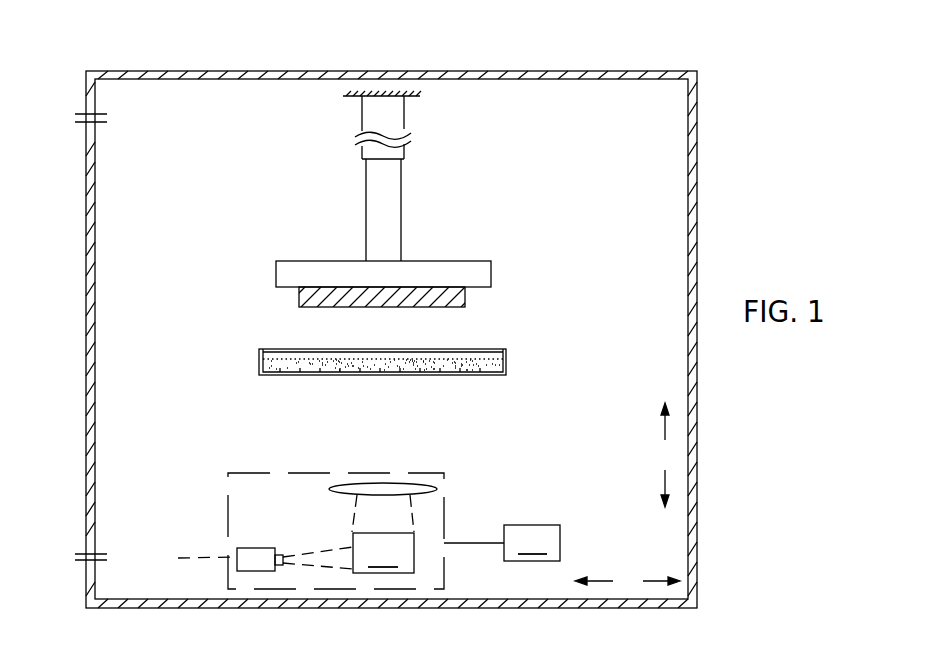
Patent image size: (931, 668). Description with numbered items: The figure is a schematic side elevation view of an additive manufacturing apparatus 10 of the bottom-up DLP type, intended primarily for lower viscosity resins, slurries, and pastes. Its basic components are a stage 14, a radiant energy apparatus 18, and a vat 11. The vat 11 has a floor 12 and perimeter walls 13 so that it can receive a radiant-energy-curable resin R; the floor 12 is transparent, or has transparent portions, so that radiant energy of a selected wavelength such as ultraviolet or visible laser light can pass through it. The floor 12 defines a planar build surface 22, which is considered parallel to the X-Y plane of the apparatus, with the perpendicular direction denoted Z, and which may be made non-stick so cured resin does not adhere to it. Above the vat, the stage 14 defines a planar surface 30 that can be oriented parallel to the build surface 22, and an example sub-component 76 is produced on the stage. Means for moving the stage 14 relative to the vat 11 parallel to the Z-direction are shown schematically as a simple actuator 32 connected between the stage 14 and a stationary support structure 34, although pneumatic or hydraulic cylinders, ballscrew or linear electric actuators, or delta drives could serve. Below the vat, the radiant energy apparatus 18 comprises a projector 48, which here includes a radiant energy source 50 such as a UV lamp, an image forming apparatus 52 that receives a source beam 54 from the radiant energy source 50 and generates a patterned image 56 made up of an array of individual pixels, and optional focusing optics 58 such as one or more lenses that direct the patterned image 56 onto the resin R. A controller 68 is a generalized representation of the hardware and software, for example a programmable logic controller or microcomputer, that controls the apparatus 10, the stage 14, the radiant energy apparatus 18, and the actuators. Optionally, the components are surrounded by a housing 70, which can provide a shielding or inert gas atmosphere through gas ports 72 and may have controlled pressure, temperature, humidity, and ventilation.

The apparatus 10 is at (478, 45).
The housing 70 is at (612, 71).
The gas ports 72 is at (83, 123).
The stationary support structure 34 is at (411, 97).
The actuator 32 is at (398, 198).
The planar surface 30 is at (396, 282).
The stage 14 is at (309, 263).
The sub-component 76 is at (418, 308).
The vat 11 is at (403, 362).
The floor 12 is at (420, 377).
The walls 13 is at (508, 365).
The resin R is at (341, 361).
The build surface 22 is at (285, 355).
The radiant energy apparatus 18 is at (309, 516).
The focusing optics 58 is at (420, 488).
The patterned image 56 is at (412, 512).
The image forming apparatus 52 is at (383, 553).
The radiant energy source 50 is at (253, 548).
The source beam 54 is at (336, 540).
The projector 48 is at (192, 560).
The controller 68 is at (502, 543).